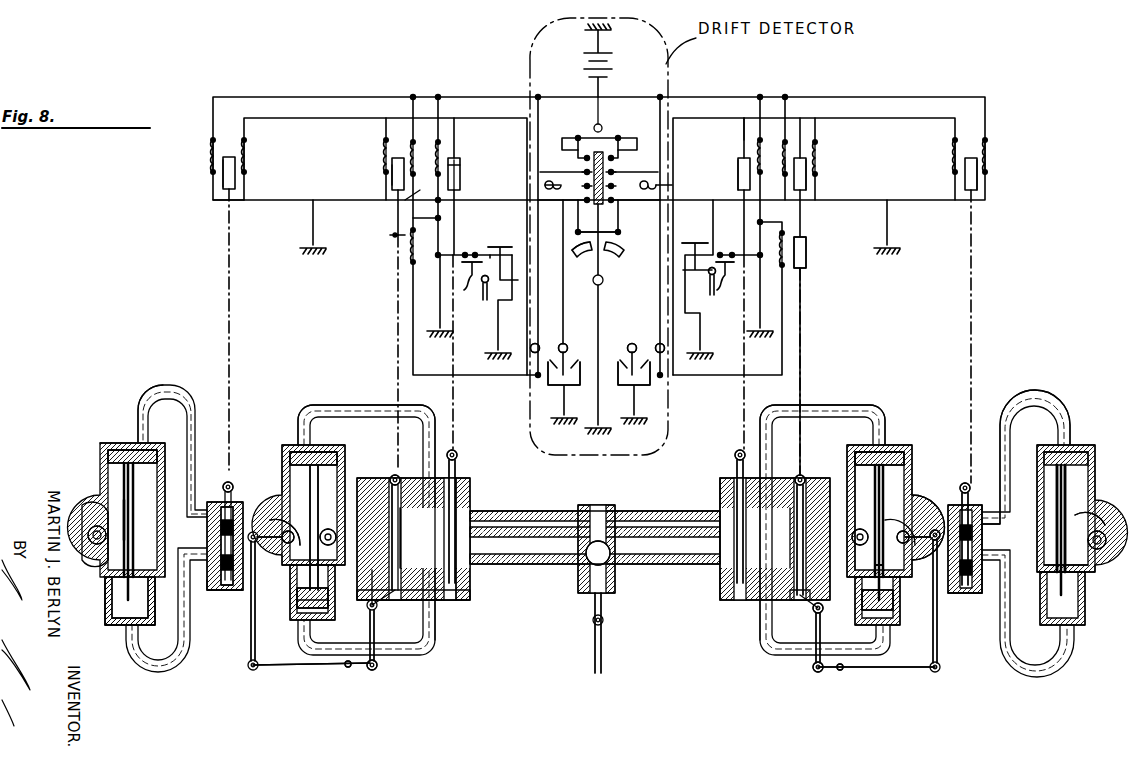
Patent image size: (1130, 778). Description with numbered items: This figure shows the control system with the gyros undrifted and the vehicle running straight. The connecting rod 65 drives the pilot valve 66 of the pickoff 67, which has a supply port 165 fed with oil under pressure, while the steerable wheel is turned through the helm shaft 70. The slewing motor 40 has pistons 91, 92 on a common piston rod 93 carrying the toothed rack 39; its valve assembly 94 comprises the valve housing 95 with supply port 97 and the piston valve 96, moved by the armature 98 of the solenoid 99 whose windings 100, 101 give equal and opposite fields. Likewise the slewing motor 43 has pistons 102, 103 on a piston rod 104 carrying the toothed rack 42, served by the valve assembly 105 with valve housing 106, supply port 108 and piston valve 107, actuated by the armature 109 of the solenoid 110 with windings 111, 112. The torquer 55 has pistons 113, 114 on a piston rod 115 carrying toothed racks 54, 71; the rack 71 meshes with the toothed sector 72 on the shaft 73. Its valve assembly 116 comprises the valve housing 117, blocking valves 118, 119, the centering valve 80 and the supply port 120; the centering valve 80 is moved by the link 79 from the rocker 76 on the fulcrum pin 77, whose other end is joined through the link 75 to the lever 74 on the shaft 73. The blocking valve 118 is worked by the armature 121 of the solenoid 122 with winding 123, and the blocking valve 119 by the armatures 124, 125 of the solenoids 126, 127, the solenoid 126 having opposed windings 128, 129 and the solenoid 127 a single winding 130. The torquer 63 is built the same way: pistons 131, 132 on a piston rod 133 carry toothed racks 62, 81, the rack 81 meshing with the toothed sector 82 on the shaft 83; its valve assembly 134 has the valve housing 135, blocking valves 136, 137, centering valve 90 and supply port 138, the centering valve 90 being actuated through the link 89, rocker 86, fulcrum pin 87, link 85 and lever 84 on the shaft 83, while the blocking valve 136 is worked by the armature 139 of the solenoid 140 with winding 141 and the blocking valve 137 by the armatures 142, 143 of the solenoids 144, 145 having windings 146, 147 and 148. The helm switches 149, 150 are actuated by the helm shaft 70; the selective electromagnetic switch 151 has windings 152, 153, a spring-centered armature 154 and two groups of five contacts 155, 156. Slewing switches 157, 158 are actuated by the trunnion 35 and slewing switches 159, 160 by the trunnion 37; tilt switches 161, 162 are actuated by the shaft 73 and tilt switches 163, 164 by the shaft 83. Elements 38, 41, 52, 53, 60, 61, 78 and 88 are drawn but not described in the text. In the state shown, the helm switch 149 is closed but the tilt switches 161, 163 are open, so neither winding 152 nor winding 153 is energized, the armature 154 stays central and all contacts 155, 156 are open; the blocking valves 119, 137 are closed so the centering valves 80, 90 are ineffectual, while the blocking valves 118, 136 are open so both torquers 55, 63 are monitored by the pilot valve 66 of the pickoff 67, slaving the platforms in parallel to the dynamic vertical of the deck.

The trunnion 35 is at (488, 284).
The trunnion 37 is at (709, 276).
The piston rod 38 is at (124, 518).
The toothed rack 39 is at (110, 478).
The slewing motor 40 is at (150, 443).
The cam 41 is at (1086, 520).
The toothed rack 42 is at (1070, 490).
The slewing motor 43 is at (1040, 446).
The cam 52 is at (334, 526).
The piston rod 53 is at (332, 500).
The toothed rack 54 is at (313, 454).
The torquer 55 is at (282, 456).
The cam 60 is at (858, 528).
The cylinder wall 61 is at (862, 508).
The toothed rack 62 is at (879, 459).
The torquer 63 is at (912, 462).
The connecting rod 65 is at (594, 634).
The pilot valve 66 is at (578, 588).
The pickoff 67 is at (648, 612).
The helm shaft 70 is at (600, 124).
The toothed rack 71 is at (292, 510).
The toothed sector 72 is at (300, 592).
The shaft 73 is at (537, 343).
The lever 74 is at (290, 548).
The link 75 is at (251, 630).
The rocker 76 is at (280, 667).
The fulcrum pin 77 is at (347, 668).
The pivot 78 is at (371, 671).
The link 79 is at (374, 624).
The centering valve 80 is at (393, 490).
The toothed rack 81 is at (908, 500).
The toothed sector 82 is at (908, 532).
The shaft 83 is at (659, 343).
The lever 84 is at (937, 530).
The link 85 is at (933, 646).
The rocker 86 is at (862, 668).
The fulcrum pin 87 is at (840, 671).
The pivot 88 is at (818, 673).
The link 89 is at (814, 638).
The centering valve 90 is at (803, 508).
The piston 91 is at (116, 447).
The piston 92 is at (130, 601).
The piston rod 93 is at (120, 562).
The valve assembly 94 is at (248, 613).
The valve housing 95 is at (224, 487).
The piston valve 96 is at (207, 536).
The supply port 97 is at (218, 588).
The armature 98 is at (223, 181).
The solenoid 99 is at (238, 131).
The winding 100 is at (213, 147).
The winding 101 is at (244, 150).
The piston 102 is at (1076, 446).
The piston 103 is at (1080, 590).
The piston rod 104 is at (1086, 566).
The valve assembly 105 is at (988, 631).
The valve housing 106 is at (966, 484).
The piston valve 107 is at (982, 530).
The supply port 108 is at (972, 592).
The armature 109 is at (977, 176).
The solenoid 110 is at (972, 133).
The winding 111 is at (985, 150).
The winding 112 is at (955, 150).
The piston 113 is at (310, 434).
The piston 114 is at (294, 618).
The piston rod 115 is at (302, 602).
The valve assembly 116 is at (476, 606).
The valve housing 117 is at (456, 480).
The blocking valve 118 is at (466, 494).
The blocking valve 119 is at (413, 602).
The supply port 120 is at (372, 578).
The armature 121 is at (460, 165).
The solenoid 122 is at (467, 155).
The winding 123 is at (438, 150).
The armature 124 is at (392, 183).
The armature 125 is at (395, 232).
The solenoid 126 is at (402, 147).
The solenoid 127 is at (393, 285).
The winding 128 is at (386, 152).
The winding 129 is at (410, 205).
The winding 130 is at (408, 250).
The piston 131 is at (891, 448).
The piston 132 is at (900, 612).
The piston rod 133 is at (893, 598).
The valve assembly 134 is at (742, 609).
The valve housing 135 is at (726, 478).
The blocking valve 136 is at (724, 488).
The blocking valve 137 is at (792, 597).
The supply port 138 is at (833, 602).
The armature 139 is at (738, 172).
The solenoid 140 is at (755, 133).
The winding 141 is at (758, 146).
The armature 142 is at (806, 176).
The armature 143 is at (806, 242).
The solenoid 144 is at (802, 145).
The solenoid 145 is at (816, 277).
The winding 146 is at (815, 150).
The winding 147 is at (785, 165).
The winding 148 is at (780, 252).
The helm switch 149 is at (598, 112).
The helm switch 150 is at (592, 262).
The selective electromagnetic switch 151 is at (597, 171).
The winding 152 is at (587, 184).
The winding 153 is at (611, 186).
The armature 154 is at (598, 217).
The group of contacts 155 is at (587, 172).
The group of contacts 156 is at (611, 172).
The slewing switch 157 is at (472, 278).
The slewing switch 158 is at (500, 246).
The slewing switch 159 is at (724, 282).
The slewing switch 160 is at (695, 242).
The tilt switch 161 is at (565, 343).
The tilt switch 162 is at (536, 375).
The tilt switch 163 is at (630, 343).
The tilt switch 164 is at (650, 372).
The supply port 165 is at (586, 566).